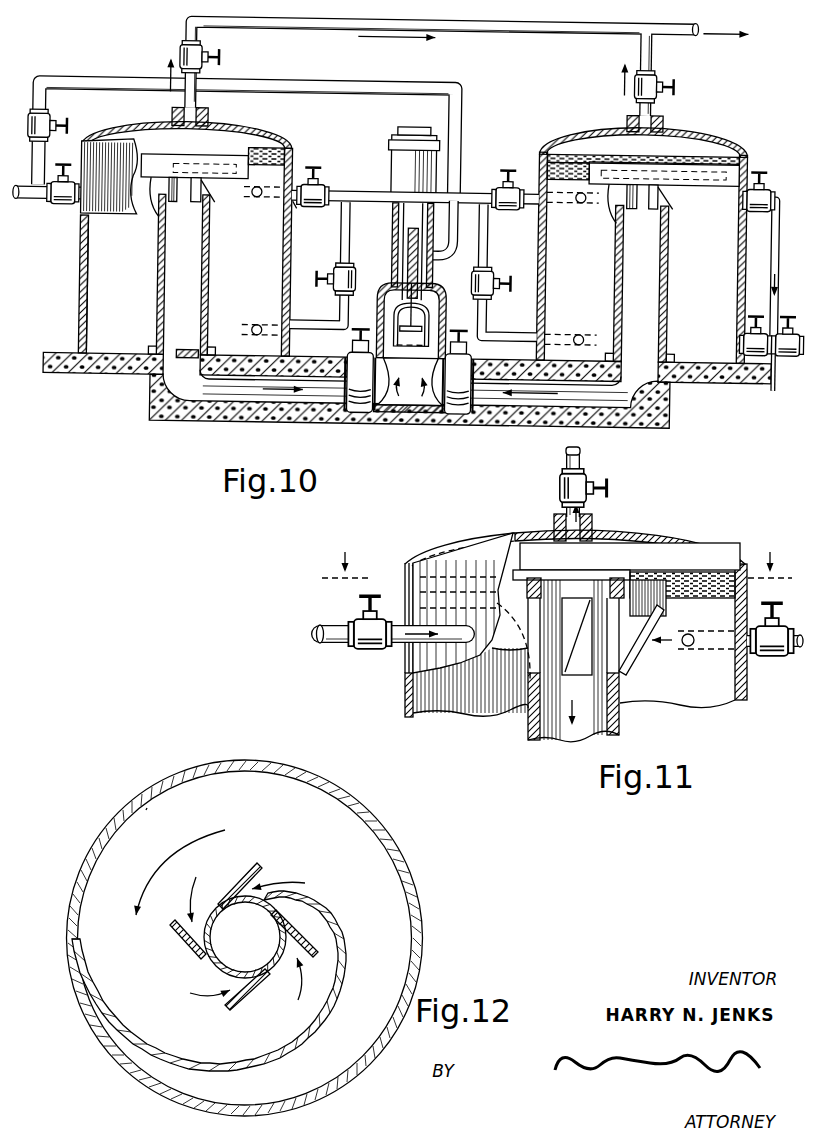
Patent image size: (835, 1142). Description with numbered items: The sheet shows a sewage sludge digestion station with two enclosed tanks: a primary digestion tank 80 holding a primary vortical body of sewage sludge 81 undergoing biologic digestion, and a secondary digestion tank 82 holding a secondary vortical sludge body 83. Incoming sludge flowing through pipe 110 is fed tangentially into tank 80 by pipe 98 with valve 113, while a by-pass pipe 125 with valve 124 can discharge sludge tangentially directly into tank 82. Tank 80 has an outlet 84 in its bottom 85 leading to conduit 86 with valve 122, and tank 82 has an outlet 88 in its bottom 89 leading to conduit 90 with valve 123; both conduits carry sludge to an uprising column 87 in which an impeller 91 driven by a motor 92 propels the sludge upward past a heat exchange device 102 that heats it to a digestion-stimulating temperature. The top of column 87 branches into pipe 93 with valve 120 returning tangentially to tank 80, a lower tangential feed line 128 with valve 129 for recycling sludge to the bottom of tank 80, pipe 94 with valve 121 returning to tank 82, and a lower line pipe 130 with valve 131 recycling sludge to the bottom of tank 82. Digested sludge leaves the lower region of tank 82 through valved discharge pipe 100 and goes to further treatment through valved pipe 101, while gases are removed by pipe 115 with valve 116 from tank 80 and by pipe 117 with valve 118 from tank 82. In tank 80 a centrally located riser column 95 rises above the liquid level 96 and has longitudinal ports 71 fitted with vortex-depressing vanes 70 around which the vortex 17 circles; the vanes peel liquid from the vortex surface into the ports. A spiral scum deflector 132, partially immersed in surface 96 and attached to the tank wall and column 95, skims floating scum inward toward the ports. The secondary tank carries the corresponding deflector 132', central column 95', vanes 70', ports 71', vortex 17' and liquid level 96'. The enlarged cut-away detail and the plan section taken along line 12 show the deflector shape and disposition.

In FIG. 11, the section line 12 is at (557, 554).
In FIG. 10, the vortex 17 is at (141, 203).
In FIG. 11, the vortex 17 is at (509, 641).
In FIG. 10, the vortex-deflecting vanes 70 is at (215, 201).
In FIG. 11, the vortex-deflecting vanes 70 is at (642, 627).
In FIG. 12, the vortex-deflecting vanes 70 is at (244, 935).
In FIG. 10, the ports 71 is at (178, 208).
In FIG. 11, the ports 71 is at (547, 650).
In FIG. 10, the primary digestion tank 80 is at (80, 255).
In FIG. 11, the primary digestion tank 80 is at (405, 690).
In FIG. 12, the primary digestion tank 80 is at (103, 830).
In FIG. 10, the sludge body 81 is at (95, 282).
In FIG. 11, the sludge body 81 is at (466, 703).
In FIG. 12, the sludge body 81 is at (147, 808).
In FIG. 10, the secondary digestion tank 82 is at (522, 203).
In FIG. 10, the secondary sludge body 83 is at (538, 275).
In FIG. 10, the outlet 84 is at (158, 381).
In FIG. 10, the bottom 85 is at (105, 379).
In FIG. 10, the conduit 86 is at (247, 405).
In FIG. 10, the uprising column 87 is at (393, 226).
In FIG. 10, the outlet 88 is at (670, 380).
In FIG. 10, the bottom 89 is at (708, 380).
In FIG. 10, the conduit 90 is at (530, 404).
In FIG. 10, the impeller 91 is at (405, 325).
In FIG. 10, the motor 92 is at (393, 165).
In FIG. 10, the pipe 93 is at (296, 203).
In FIG. 11, the pipe 93 is at (753, 652).
In FIG. 10, the pipe 94 is at (532, 190).
In FIG. 10, the central riser column 95 is at (192, 274).
In FIG. 11, the central riser column 95 is at (589, 661).
In FIG. 12, the central riser column 95 is at (227, 940).
In FIG. 10, the liquid level 96 is at (266, 138).
In FIG. 11, the liquid level 96 is at (682, 561).
In FIG. 10, the feed pipe 98 is at (104, 205).
In FIG. 11, the feed pipe 98 is at (393, 623).
In FIG. 10, the digested sludge discharge pipe 100 is at (750, 328).
In FIG. 10, the valved pipe 101 is at (775, 360).
In FIG. 10, the heat exchange device 102 is at (386, 268).
In FIG. 10, the sludge inlet pipe 110 is at (27, 205).
In FIG. 10, the valve 113 is at (64, 212).
In FIG. 11, the valve 113 is at (372, 651).
In FIG. 10, the gas pipe 115 is at (200, 80).
In FIG. 11, the gas pipe 115 is at (592, 512).
In FIG. 10, the valve 116 is at (174, 56).
In FIG. 11, the valve 116 is at (556, 492).
In FIG. 10, the gas pipe 117 is at (649, 55).
In FIG. 10, the valve 118 is at (652, 92).
In FIG. 10, the valve 120 is at (324, 194).
In FIG. 11, the valve 120 is at (774, 662).
In FIG. 10, the valve 121 is at (500, 194).
In FIG. 10, the valve 122 is at (356, 416).
In FIG. 10, the valve 123 is at (462, 416).
In FIG. 10, the valve 124 is at (44, 124).
In FIG. 10, the by-pass pipe 125 is at (105, 83).
In FIG. 10, the tangential sludge feed line 128 is at (340, 318).
In FIG. 10, the valve 129 is at (337, 270).
In FIG. 10, the line pipe 130 is at (528, 345).
In FIG. 10, the valve 131 is at (492, 294).
In FIG. 10, the spiral scum deflector 132 is at (195, 151).
In FIG. 11, the spiral scum deflector 132 is at (626, 570).
In FIG. 12, the spiral scum deflector 132 is at (223, 981).
In FIG. 10, the spiral scum deflector 132' is at (664, 159).
In FIG. 10, the liquid level 96' is at (655, 148).
In FIG. 10, the central column 95' is at (657, 284).
In FIG. 10, the vortex-deflecting vanes 70' is at (676, 205).
In FIG. 10, the ports 71' is at (641, 211).
In FIG. 10, the vortex 17' is at (598, 204).